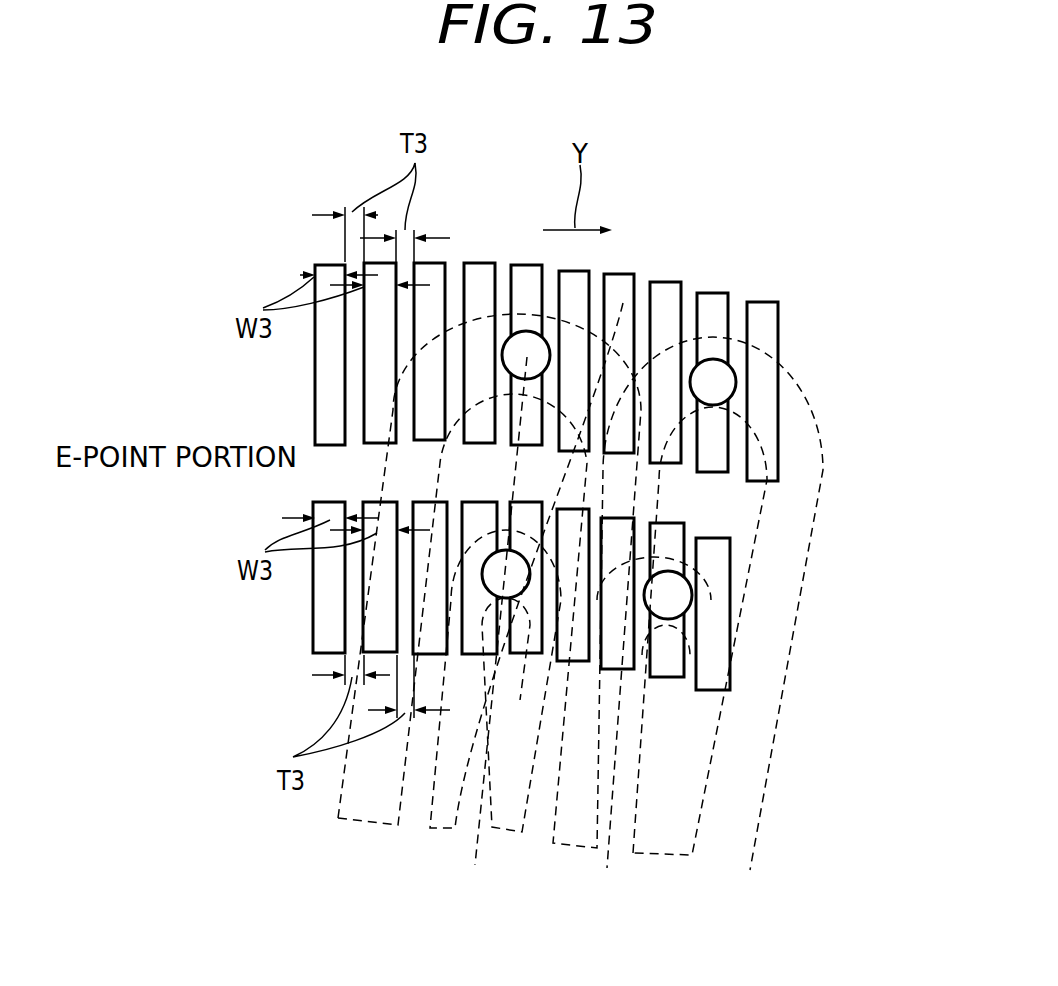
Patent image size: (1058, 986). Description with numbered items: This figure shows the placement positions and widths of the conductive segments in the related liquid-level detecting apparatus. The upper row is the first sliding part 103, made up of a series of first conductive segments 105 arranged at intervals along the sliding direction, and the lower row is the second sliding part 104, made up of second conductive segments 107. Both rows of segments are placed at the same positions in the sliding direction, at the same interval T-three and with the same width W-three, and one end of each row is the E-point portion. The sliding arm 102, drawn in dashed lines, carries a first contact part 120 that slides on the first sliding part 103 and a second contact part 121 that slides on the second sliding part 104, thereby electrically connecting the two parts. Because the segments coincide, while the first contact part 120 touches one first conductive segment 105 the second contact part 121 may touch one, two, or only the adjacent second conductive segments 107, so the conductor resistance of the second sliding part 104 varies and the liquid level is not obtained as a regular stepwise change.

The sliding arm 102 is at (623, 303).
The first sliding part 103 is at (470, 341).
The second sliding part 104 is at (498, 651).
The first conductive segments 105 is at (762, 303).
The second conductive segments 107 is at (677, 677).
The first contact part 120 is at (527, 333).
The second contact part 121 is at (482, 577).